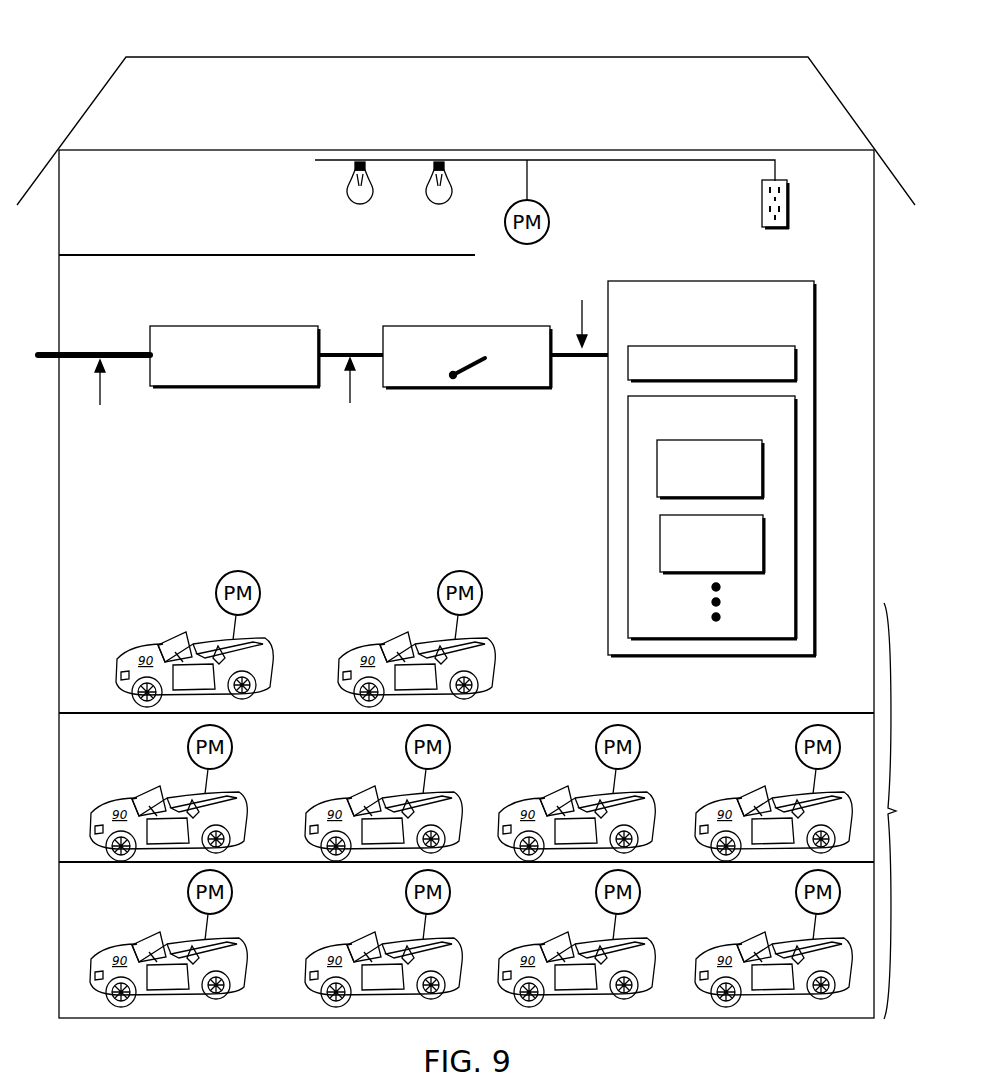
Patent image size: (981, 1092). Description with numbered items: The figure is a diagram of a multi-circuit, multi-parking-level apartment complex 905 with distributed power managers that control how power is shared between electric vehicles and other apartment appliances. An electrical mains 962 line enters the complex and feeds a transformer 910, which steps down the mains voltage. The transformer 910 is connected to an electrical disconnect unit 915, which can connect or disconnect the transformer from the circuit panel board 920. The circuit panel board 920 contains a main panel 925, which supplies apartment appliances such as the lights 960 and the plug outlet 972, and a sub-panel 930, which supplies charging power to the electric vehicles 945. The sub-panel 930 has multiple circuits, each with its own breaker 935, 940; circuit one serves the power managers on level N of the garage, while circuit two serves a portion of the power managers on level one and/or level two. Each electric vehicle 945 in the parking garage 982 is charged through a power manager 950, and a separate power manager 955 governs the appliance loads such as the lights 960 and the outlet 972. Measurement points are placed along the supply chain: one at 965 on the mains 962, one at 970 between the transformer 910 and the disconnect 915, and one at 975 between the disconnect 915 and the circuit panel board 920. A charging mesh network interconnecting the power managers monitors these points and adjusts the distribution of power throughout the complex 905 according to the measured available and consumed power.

The apartment complex 905 is at (100, 90).
The transformer 910 is at (235, 327).
The electrical disconnect unit 915 is at (465, 327).
The circuit panel board 920 is at (712, 280).
The main panel 925 is at (765, 346).
The sub-panel 930 is at (628, 435).
The breaker 935 is at (657, 470).
The breaker 940 is at (660, 555).
The electric vehicle 945 is at (167, 638).
The power manager 950 is at (238, 571).
The power manager 955 is at (549, 228).
The lights 960 is at (399, 190).
The electrical mains 962 is at (50, 352).
The measurement point 965 is at (100, 397).
The measurement point 970 is at (351, 395).
The plug outlet 972 is at (790, 197).
The measurement point 975 is at (580, 314).
The parking garage 982 is at (911, 811).